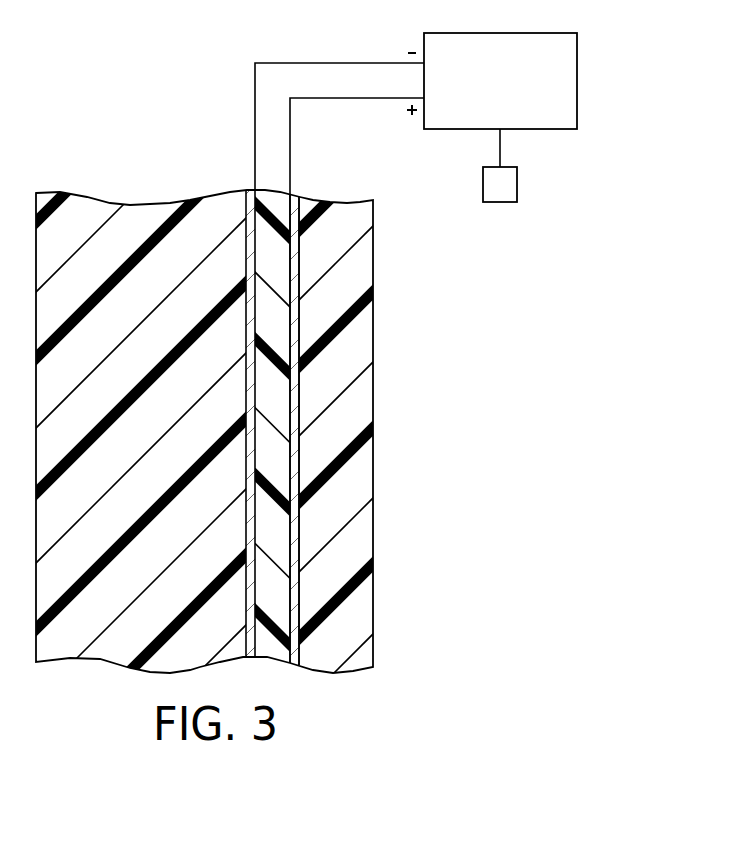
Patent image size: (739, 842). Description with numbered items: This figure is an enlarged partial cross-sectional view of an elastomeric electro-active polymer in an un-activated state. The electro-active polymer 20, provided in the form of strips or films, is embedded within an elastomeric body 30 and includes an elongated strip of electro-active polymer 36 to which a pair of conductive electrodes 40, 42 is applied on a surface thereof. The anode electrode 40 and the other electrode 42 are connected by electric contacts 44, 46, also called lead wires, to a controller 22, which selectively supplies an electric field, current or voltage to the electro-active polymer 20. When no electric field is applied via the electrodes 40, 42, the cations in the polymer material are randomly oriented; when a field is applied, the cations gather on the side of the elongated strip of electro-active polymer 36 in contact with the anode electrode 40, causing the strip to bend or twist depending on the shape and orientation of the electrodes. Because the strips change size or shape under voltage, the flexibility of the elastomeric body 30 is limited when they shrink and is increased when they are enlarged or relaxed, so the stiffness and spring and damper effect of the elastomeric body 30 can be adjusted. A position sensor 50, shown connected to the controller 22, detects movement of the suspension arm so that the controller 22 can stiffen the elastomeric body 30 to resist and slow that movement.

The electro-active polymer 20 is at (322, 389).
The controller 22 is at (486, 92).
The elastomeric body 30 is at (427, 430).
The elongated strip of electro-active polymer 36 is at (275, 259).
The anode electrode 40 is at (250, 200).
The electrode 42 is at (295, 203).
The electric contact 44 is at (338, 63).
The electric contact 46 is at (357, 98).
The position sensor 50 is at (489, 195).